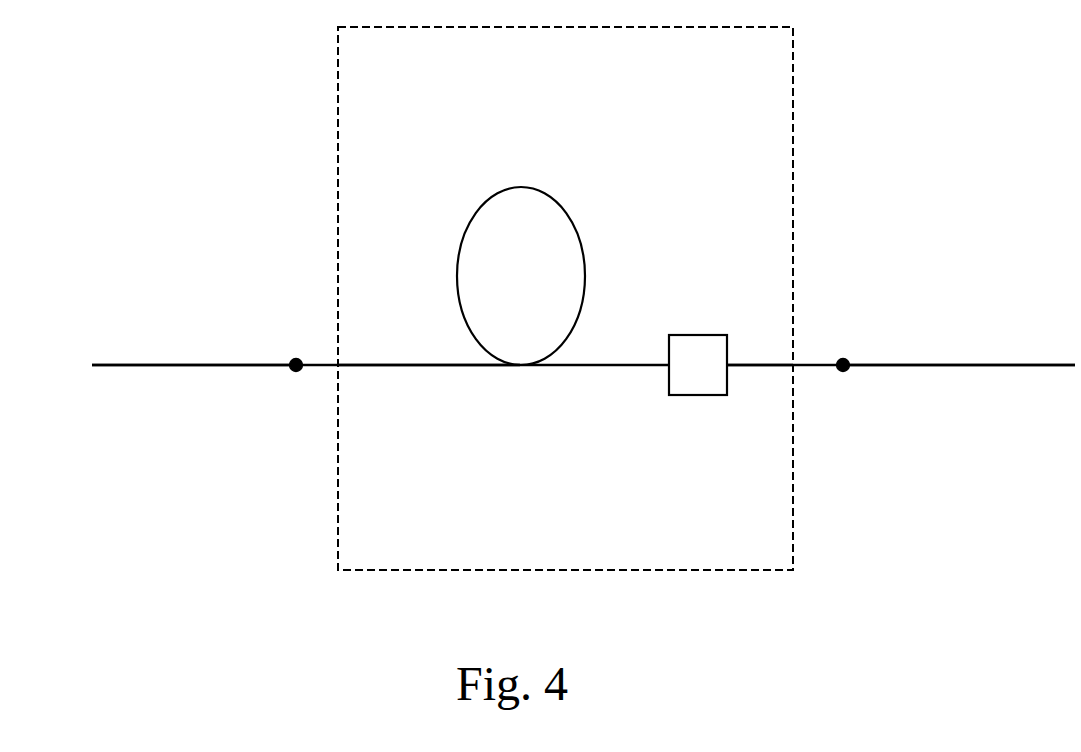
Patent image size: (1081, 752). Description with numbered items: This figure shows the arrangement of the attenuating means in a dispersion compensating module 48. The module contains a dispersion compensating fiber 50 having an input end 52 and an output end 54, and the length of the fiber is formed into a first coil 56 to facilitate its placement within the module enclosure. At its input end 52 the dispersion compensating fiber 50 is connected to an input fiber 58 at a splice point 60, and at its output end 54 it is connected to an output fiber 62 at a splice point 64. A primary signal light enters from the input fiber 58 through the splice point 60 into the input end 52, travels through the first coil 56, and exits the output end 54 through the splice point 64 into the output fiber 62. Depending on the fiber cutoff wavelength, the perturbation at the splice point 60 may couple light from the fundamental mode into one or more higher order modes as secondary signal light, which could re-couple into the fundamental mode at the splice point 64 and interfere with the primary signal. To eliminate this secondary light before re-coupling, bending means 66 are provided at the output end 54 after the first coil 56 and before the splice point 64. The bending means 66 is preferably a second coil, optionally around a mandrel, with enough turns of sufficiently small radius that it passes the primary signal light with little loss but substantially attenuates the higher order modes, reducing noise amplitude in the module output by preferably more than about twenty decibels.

The optical assembly (dashed enclosure) 48 is at (305, 542).
The dispersion compensating fiber 50 is at (571, 403).
The input end 52 is at (372, 366).
The output end 54 is at (752, 365).
The first coil 56 is at (476, 218).
The input fiber 58 is at (210, 365).
The splice point 60 is at (296, 372).
The output fiber 62 is at (916, 365).
The splice point 64 is at (845, 372).
The bending means 66 is at (703, 335).